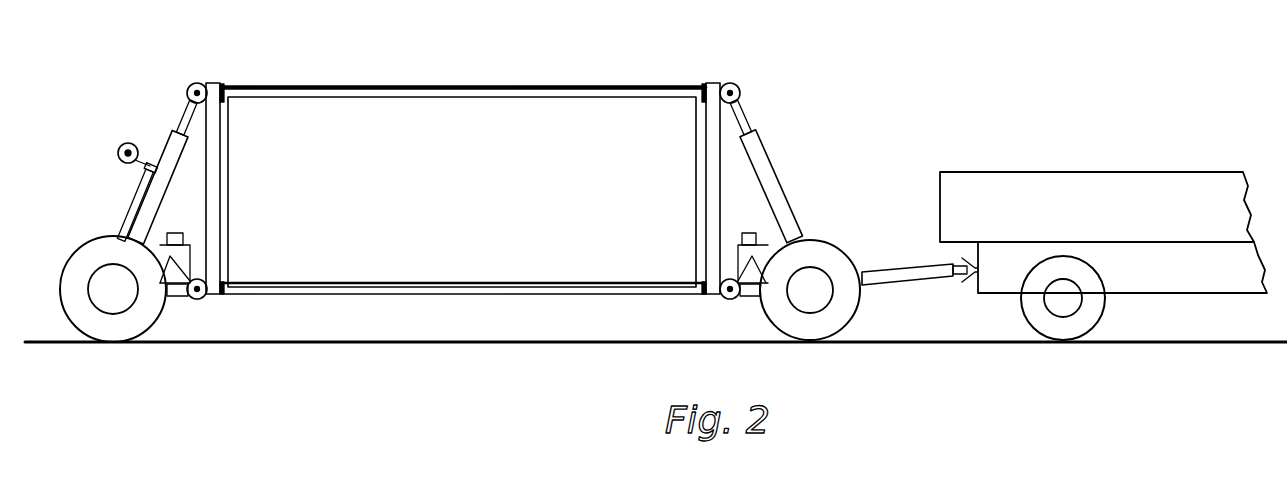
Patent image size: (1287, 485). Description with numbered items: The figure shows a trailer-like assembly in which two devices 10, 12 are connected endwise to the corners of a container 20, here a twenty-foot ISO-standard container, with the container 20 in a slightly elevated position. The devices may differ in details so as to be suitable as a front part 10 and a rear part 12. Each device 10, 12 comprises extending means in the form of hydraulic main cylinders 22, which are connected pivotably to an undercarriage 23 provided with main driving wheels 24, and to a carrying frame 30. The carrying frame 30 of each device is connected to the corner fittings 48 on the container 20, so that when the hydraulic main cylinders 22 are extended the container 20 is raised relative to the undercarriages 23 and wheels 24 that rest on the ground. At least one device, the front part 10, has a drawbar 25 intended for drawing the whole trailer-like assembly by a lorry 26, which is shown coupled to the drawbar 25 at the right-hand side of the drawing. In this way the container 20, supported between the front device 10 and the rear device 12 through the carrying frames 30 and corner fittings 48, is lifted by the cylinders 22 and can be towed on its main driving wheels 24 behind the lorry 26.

The front device 10 is at (773, 158).
The rear device 12 is at (172, 123).
The container 20 is at (505, 82).
The hydraulic main cylinder 22 is at (173, 155).
The undercarriage 23 is at (177, 297).
The main driving wheel 24 is at (82, 263).
The drawbar 25 is at (917, 278).
The lorry 26 is at (1153, 167).
The carrying frame 30 is at (212, 86).
The corner fitting 48 is at (226, 296).